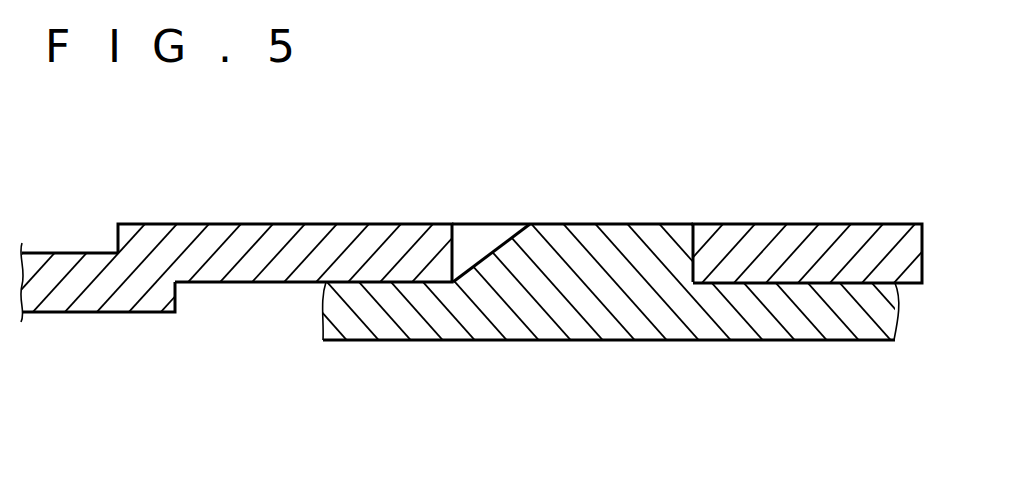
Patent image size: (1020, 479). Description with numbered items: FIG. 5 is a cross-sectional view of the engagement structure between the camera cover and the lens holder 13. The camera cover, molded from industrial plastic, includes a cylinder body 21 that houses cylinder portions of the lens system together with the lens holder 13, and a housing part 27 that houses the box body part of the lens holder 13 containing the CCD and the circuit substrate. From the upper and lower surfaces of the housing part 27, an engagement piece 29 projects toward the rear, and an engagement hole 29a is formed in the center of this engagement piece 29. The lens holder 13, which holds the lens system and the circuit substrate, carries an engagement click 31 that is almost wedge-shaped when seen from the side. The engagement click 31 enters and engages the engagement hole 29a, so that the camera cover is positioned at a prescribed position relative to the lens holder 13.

The lens holder 13 is at (782, 325).
The cylinder body 21 is at (65, 265).
The housing part 27 is at (245, 240).
The engagement piece 29 is at (785, 232).
The engagement hole 29a is at (492, 242).
The engagement click 31 is at (598, 255).